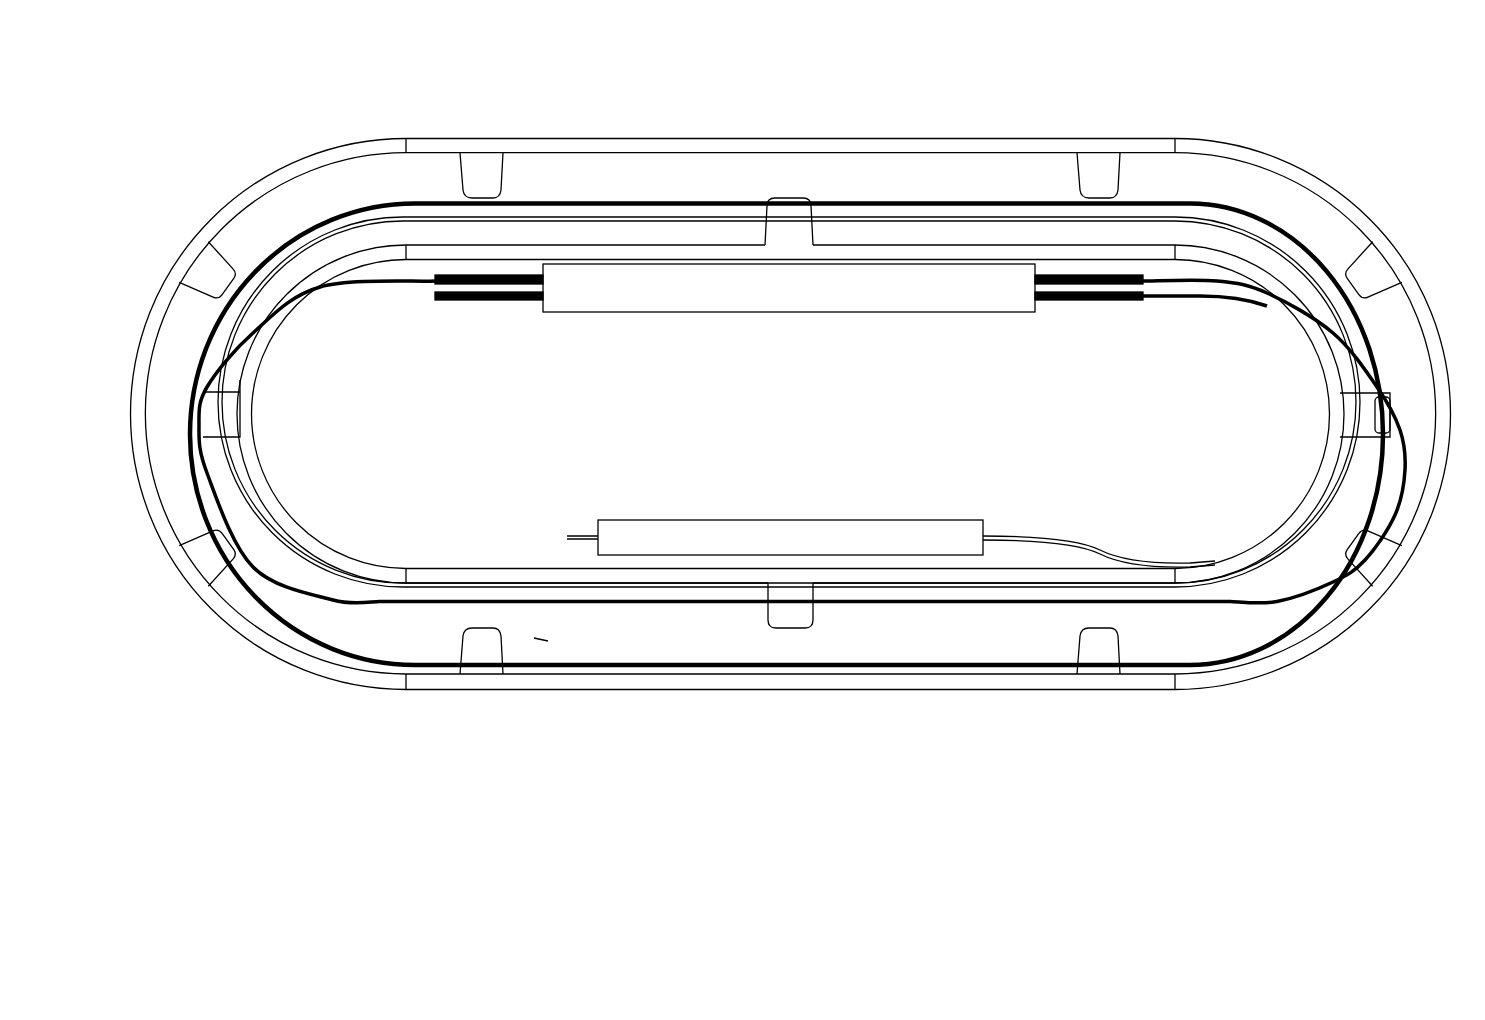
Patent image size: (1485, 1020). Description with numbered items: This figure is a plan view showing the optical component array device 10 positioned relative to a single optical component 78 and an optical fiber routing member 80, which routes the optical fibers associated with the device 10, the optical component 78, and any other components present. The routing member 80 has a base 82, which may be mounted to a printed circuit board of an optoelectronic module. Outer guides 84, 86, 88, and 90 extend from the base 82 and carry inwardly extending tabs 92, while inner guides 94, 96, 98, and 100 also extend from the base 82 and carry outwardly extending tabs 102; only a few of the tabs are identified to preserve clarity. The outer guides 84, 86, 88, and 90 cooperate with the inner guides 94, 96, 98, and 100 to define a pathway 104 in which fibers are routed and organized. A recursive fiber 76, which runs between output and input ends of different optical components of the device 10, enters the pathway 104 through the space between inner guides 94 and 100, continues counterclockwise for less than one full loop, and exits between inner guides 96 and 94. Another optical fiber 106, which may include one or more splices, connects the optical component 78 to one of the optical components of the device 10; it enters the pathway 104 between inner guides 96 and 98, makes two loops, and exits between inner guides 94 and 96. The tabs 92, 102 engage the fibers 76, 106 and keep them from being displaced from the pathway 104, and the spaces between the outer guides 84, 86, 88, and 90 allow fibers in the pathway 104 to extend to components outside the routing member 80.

The optical component array device 10 is at (708, 265).
The recursive fiber 76 is at (322, 602).
The optical component 78 is at (872, 555).
The optical fiber routing member 80 is at (1298, 148).
The base 82 is at (789, 416).
The outer guide 84 is at (560, 138).
The outer guide 86 is at (1420, 540).
The outer guide 88 is at (606, 690).
The outer guide 90 is at (158, 547).
The inwardly extending tab 92 is at (1097, 183).
The inner guide 94 is at (655, 250).
The inner guide 96 is at (1348, 412).
The inner guide 98 is at (690, 577).
The inner guide 100 is at (228, 410).
The outwardly extending tab 102 is at (800, 232).
The pathway 104 is at (540, 642).
The optical fiber 106 is at (1088, 547).